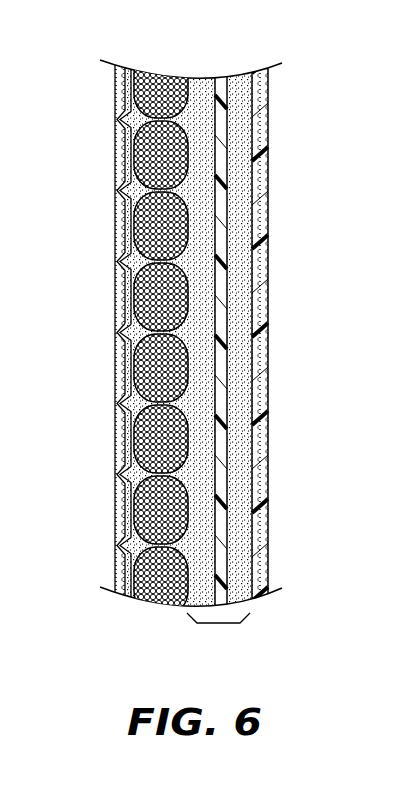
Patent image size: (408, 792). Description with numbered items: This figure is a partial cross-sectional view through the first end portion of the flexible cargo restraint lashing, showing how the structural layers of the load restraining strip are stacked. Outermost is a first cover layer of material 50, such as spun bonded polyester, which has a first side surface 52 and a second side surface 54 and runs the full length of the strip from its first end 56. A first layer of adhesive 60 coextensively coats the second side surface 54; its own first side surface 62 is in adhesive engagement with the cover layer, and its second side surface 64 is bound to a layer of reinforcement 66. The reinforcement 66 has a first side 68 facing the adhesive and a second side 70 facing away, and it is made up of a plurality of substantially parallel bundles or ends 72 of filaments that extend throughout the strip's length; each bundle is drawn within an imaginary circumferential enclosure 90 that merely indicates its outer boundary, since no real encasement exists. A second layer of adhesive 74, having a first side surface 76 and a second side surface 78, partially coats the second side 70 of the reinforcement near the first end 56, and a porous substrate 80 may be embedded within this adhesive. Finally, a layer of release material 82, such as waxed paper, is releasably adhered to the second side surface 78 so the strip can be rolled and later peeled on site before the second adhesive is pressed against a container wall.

The first cover layer of material 50 is at (118, 512).
The first side surface 52 is at (127, 455).
The second side surface 54 is at (127, 373).
The first end 56 is at (268, 130).
The first layer of adhesive 60 is at (130, 67).
The first side surface 62 is at (122, 134).
The second side surface 64 is at (123, 168).
The layer of reinforcement 66 is at (162, 70).
The first side 68 is at (118, 86).
The second side 70 is at (216, 78).
The ends of filaments 72 is at (136, 238).
The second layer of adhesive 74 is at (220, 623).
The first side surface 76 is at (188, 503).
The second side surface 78 is at (258, 563).
The substrate 80 is at (221, 380).
The layer of release material 82 is at (268, 305).
The imaginary circumferential enclosure 90 is at (190, 230).